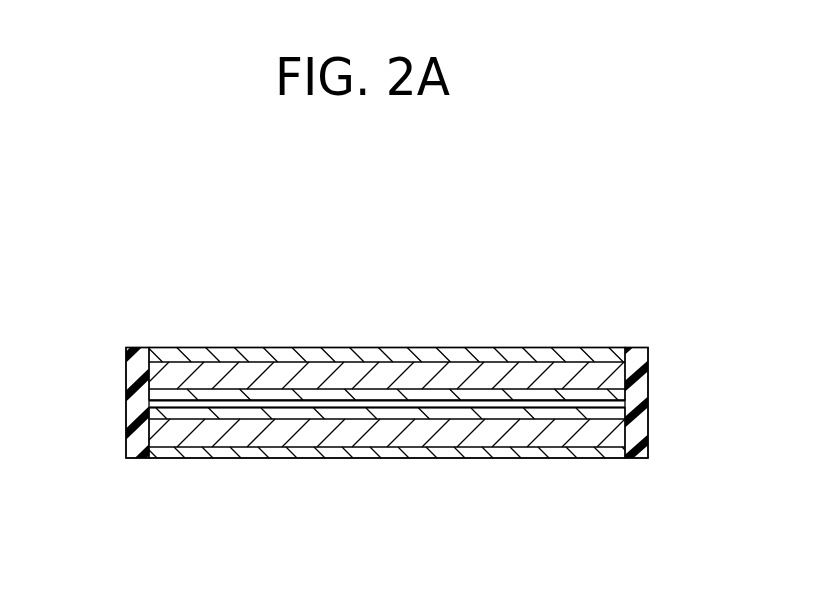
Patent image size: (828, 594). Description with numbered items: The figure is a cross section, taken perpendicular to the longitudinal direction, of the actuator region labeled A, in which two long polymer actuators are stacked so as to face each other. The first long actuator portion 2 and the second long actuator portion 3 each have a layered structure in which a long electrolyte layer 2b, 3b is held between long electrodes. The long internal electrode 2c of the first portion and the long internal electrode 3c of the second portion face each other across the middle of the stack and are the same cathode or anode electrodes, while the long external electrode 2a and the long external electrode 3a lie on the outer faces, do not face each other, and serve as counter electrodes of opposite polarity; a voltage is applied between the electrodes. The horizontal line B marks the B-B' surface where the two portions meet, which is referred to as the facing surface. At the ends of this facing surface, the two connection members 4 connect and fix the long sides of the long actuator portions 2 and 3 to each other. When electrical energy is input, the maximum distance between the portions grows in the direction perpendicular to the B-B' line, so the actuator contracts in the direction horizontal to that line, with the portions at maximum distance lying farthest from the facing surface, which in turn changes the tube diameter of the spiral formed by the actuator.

The light guide plate region A is at (110, 172).
The B-B' line B is at (715, 405).
The first long actuator portion 2 is at (387, 331).
The long external electrode 2a is at (429, 355).
The long electrolyte layer 2b is at (488, 377).
The long internal electrode 2c is at (540, 397).
The second long actuator portion 3 is at (387, 479).
The long external electrode 3a is at (438, 453).
The long electrolyte layer 3b is at (490, 433).
The long internal electrode 3c is at (533, 413).
The connection member 4 is at (143, 347).